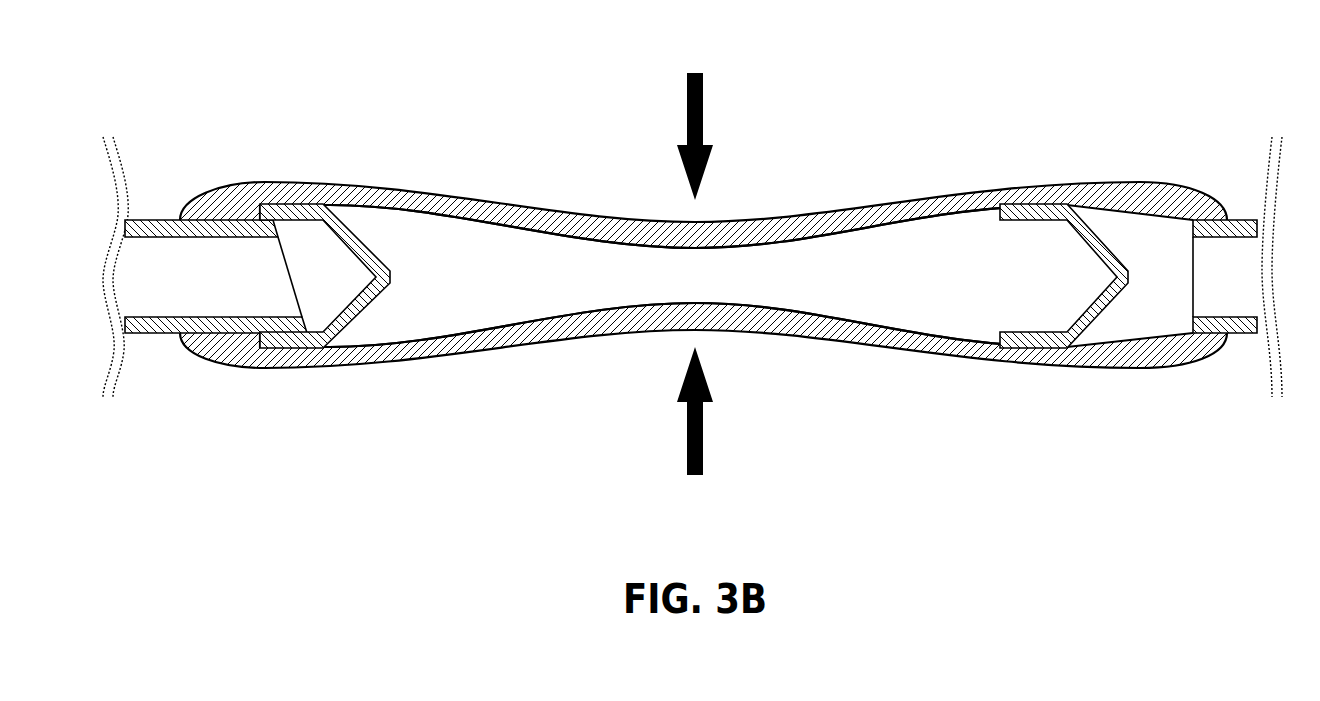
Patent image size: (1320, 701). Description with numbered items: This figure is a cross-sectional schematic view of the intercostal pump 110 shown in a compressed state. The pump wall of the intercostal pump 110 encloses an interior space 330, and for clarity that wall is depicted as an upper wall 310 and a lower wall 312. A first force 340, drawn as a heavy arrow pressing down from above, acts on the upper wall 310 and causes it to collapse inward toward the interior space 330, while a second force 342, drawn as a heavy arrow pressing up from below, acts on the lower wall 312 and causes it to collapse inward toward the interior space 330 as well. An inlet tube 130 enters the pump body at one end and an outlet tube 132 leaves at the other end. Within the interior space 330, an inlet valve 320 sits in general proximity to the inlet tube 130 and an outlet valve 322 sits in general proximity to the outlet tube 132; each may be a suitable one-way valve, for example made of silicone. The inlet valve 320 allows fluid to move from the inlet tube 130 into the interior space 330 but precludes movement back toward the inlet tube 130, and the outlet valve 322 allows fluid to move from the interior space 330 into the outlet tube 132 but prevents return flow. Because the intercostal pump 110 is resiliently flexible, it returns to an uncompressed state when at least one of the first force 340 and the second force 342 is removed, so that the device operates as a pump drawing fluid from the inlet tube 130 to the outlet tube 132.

The intercostal pump 110 is at (890, 193).
The inlet tube 130 is at (147, 219).
The outlet tube 132 is at (1233, 220).
The upper wall 310 is at (530, 213).
The lower wall 312 is at (536, 341).
The inlet valve 320 is at (381, 268).
The outlet valve 322 is at (1128, 267).
The interior space 330 is at (728, 275).
The first force 340 is at (699, 72).
The second force 342 is at (690, 477).